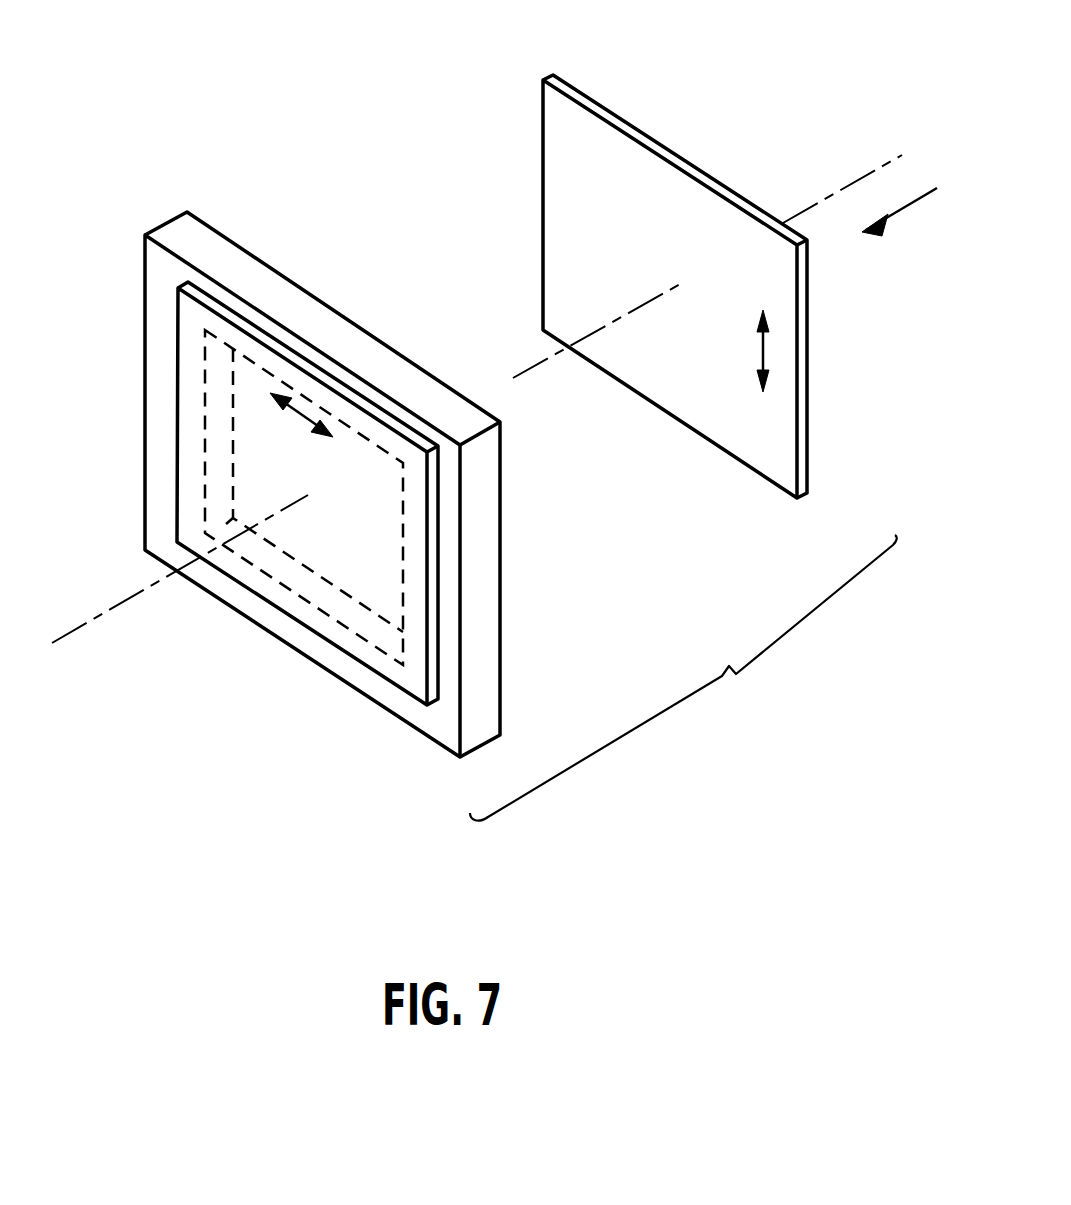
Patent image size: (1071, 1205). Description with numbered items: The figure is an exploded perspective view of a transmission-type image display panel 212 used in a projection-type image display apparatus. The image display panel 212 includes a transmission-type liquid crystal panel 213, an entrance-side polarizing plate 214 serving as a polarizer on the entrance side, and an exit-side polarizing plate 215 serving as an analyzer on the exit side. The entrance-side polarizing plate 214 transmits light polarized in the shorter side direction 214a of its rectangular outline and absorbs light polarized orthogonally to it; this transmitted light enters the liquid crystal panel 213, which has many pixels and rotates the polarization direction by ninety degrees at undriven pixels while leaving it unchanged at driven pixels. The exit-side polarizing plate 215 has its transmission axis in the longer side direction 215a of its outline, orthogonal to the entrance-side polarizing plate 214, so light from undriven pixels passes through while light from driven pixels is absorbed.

The image display panel 212 is at (683, 678).
The transmission-type liquid crystal panel 213 is at (222, 234).
The entrance-side polarizing plate 214 is at (605, 108).
The shorter side direction 214a is at (763, 350).
The exit-side polarizing plate 215 is at (224, 577).
The longer side direction 215a is at (303, 413).